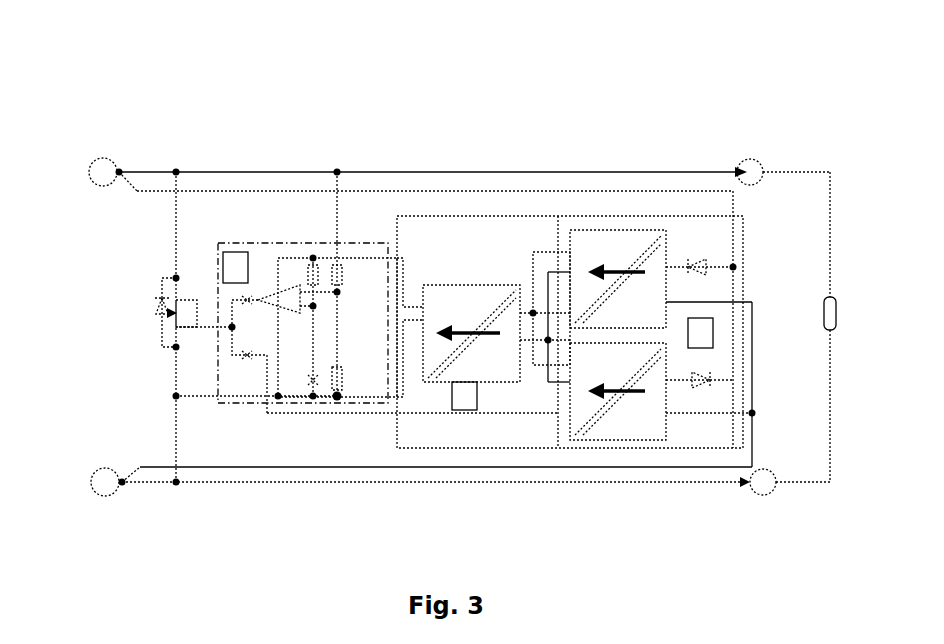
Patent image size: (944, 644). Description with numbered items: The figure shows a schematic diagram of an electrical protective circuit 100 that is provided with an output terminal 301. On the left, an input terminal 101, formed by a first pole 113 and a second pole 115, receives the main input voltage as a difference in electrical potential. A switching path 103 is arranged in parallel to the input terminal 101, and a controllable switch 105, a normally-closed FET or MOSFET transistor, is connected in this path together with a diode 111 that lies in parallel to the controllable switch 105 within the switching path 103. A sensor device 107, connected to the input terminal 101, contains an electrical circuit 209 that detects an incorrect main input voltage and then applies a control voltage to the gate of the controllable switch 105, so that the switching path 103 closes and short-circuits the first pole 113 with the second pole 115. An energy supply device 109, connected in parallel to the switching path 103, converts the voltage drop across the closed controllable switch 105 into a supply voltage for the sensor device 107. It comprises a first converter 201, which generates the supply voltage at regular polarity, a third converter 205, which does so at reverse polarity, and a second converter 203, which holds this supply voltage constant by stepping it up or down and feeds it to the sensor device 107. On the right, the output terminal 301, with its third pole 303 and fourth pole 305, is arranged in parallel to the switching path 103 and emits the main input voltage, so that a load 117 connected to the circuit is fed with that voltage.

The electrical protective circuit 100 is at (462, 80).
The input terminal 101 is at (140, 519).
The switching path 103 is at (112, 327).
The controllable switch 105 is at (193, 327).
The sensor device 107 is at (357, 405).
The energy supply device 109 is at (535, 452).
The diode 111 is at (155, 305).
The first pole 113 is at (103, 158).
The second pole 115 is at (97, 480).
The load 117 is at (837, 315).
The first converter 201 is at (627, 230).
The second converter 203 is at (478, 285).
The third converter 205 is at (627, 445).
The electrical circuit 209 is at (258, 260).
The output terminal 301 is at (798, 514).
The third pole 303 is at (748, 160).
The fourth pole 305 is at (776, 483).